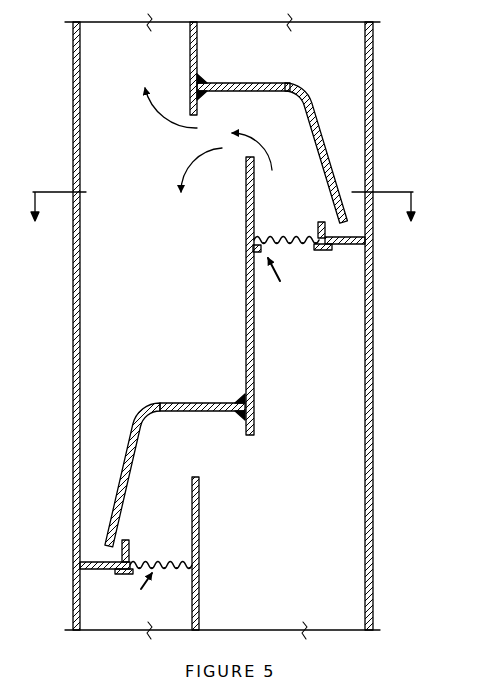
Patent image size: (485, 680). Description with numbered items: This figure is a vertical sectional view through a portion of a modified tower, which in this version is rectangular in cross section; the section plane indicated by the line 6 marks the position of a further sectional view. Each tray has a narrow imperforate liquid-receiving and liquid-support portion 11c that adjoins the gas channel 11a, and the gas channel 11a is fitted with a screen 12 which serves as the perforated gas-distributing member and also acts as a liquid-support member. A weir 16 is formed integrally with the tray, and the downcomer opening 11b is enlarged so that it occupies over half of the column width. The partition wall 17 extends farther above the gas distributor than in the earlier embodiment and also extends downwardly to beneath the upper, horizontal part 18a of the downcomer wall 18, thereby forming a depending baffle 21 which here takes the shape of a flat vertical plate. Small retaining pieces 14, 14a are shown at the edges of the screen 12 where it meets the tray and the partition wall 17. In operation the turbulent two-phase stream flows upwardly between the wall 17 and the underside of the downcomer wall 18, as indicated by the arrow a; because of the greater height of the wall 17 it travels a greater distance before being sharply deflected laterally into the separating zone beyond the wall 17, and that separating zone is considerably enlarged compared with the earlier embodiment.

The section line 6- 6 is at (223, 221).
The arrow a is at (219, 140).
The gas channel 11a is at (212, 431).
The downcomer opening 11b is at (144, 246).
The liquid-receiving and liquid-support portion 11c is at (341, 246).
The screen 12 is at (286, 245).
The seal retaining block 14 is at (323, 251).
The lower seal retaining block 14a is at (190, 571).
The weir 16 is at (320, 223).
The partition wall 17 is at (246, 182).
The downcomer wall 18 is at (312, 131).
The upper horizontal part of downcomer wall 18a is at (218, 92).
The depending baffle 21 is at (257, 426).